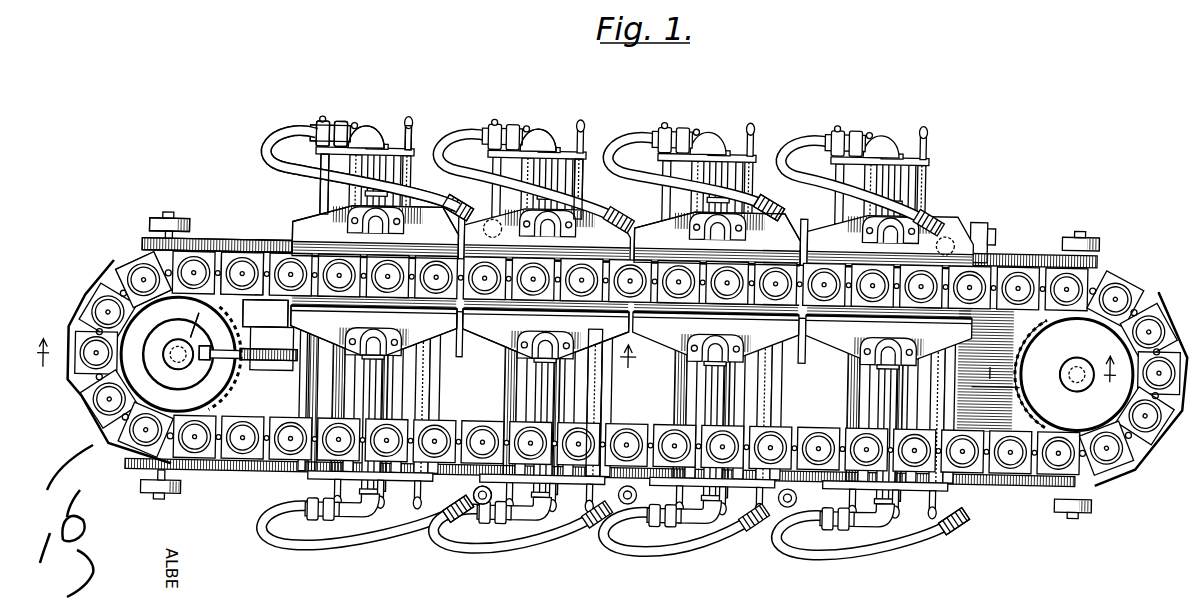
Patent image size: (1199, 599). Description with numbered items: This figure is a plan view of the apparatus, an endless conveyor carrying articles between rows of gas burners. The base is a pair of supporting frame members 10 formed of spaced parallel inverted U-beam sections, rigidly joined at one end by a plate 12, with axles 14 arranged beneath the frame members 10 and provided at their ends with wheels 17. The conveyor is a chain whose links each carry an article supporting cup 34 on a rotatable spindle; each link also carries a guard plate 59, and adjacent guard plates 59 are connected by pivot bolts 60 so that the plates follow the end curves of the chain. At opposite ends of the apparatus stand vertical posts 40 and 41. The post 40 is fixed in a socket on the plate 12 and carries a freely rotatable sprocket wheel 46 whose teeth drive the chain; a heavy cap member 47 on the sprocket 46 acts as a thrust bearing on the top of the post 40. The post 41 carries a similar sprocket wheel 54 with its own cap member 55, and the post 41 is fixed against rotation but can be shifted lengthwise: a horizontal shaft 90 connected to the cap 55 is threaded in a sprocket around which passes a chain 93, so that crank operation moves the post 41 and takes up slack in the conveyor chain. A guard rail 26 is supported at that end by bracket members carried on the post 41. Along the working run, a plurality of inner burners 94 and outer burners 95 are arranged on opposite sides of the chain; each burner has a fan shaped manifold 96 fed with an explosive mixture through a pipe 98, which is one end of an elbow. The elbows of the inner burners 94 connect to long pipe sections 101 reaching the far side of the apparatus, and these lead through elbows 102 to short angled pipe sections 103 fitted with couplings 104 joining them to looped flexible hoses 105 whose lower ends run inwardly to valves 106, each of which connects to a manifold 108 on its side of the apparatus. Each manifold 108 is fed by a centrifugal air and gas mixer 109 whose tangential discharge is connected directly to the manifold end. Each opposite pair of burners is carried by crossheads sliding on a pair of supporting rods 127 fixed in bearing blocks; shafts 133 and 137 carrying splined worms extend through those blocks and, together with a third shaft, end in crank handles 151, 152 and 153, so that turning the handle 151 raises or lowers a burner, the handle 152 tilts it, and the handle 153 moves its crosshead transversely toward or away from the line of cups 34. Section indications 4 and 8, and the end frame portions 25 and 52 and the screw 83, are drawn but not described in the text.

The section line 4- 4 is at (337, 352).
The section line 8- 8 is at (1056, 364).
The supporting frame members 10 is at (152, 246).
The plate 12 is at (1000, 374).
The axles 14 is at (185, 247).
The wheels 17 is at (175, 228).
The end frame 25 is at (1172, 300).
The guard rail 26 is at (86, 420).
The article supporting member or cup 34 is at (238, 268).
The post 40 is at (1079, 350).
The post 41 is at (165, 376).
The sprocket wheel 46 is at (1048, 358).
The cap member 47 is at (1065, 382).
The frame member 52 is at (1188, 395).
The sprocket wheel 54 is at (250, 320).
The cap member 55 is at (197, 326).
The guard plate 59 is at (122, 278).
The pivot bolts 60 is at (96, 290).
The adjusting screw 83 is at (285, 358).
The horizontal shaft 90 is at (213, 360).
The chain 93 is at (330, 350).
The inner burners 94 is at (481, 342).
The outer burners 95 is at (768, 200).
The fan shaped manifold 96 is at (300, 231).
The pipe 98 is at (722, 240).
The pipe sections 101 is at (360, 545).
The elbows 102 is at (380, 140).
The pipe sections 103 is at (338, 130).
The couplings 104 is at (500, 130).
The flexible hoses 105 is at (262, 168).
The valves 106 is at (460, 208).
The manifold 108 is at (950, 210).
The air and gas mixer 109 is at (448, 525).
The supporting rods 127 is at (530, 373).
The shaft 133 is at (578, 179).
The shaft 137 is at (318, 198).
The crank handle 151 is at (406, 126).
The crank handle 152 is at (319, 124).
The crank handle 153 is at (352, 130).